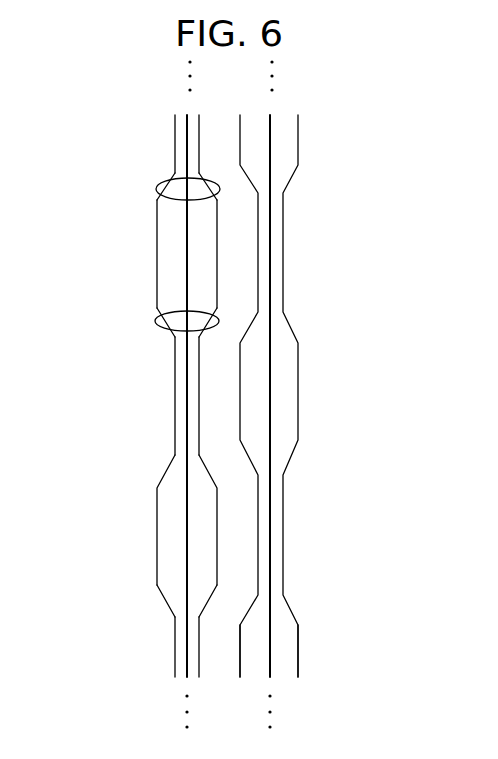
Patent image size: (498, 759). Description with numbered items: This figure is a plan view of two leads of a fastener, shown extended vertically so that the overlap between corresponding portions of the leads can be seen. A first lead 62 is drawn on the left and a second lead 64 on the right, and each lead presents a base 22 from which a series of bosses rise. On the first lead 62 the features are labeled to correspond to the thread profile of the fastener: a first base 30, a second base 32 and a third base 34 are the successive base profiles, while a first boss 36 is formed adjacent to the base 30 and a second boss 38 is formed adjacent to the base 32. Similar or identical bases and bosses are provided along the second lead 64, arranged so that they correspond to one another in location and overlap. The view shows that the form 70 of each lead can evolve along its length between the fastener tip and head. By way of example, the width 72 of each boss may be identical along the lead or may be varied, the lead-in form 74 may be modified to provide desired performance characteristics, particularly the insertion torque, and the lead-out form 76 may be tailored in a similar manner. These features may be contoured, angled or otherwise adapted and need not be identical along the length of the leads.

The base 22 is at (218, 397).
The first base 30 is at (175, 143).
The second base 32 is at (177, 361).
The third base 34 is at (172, 647).
The first boss 36 is at (168, 255).
The second boss 38 is at (168, 552).
The first lead 62 is at (163, 603).
The second lead 64 is at (300, 640).
The form 70 is at (131, 205).
The width 72 is at (238, 297).
The lead-in form 74 is at (160, 186).
The lead-out form 76 is at (160, 320).